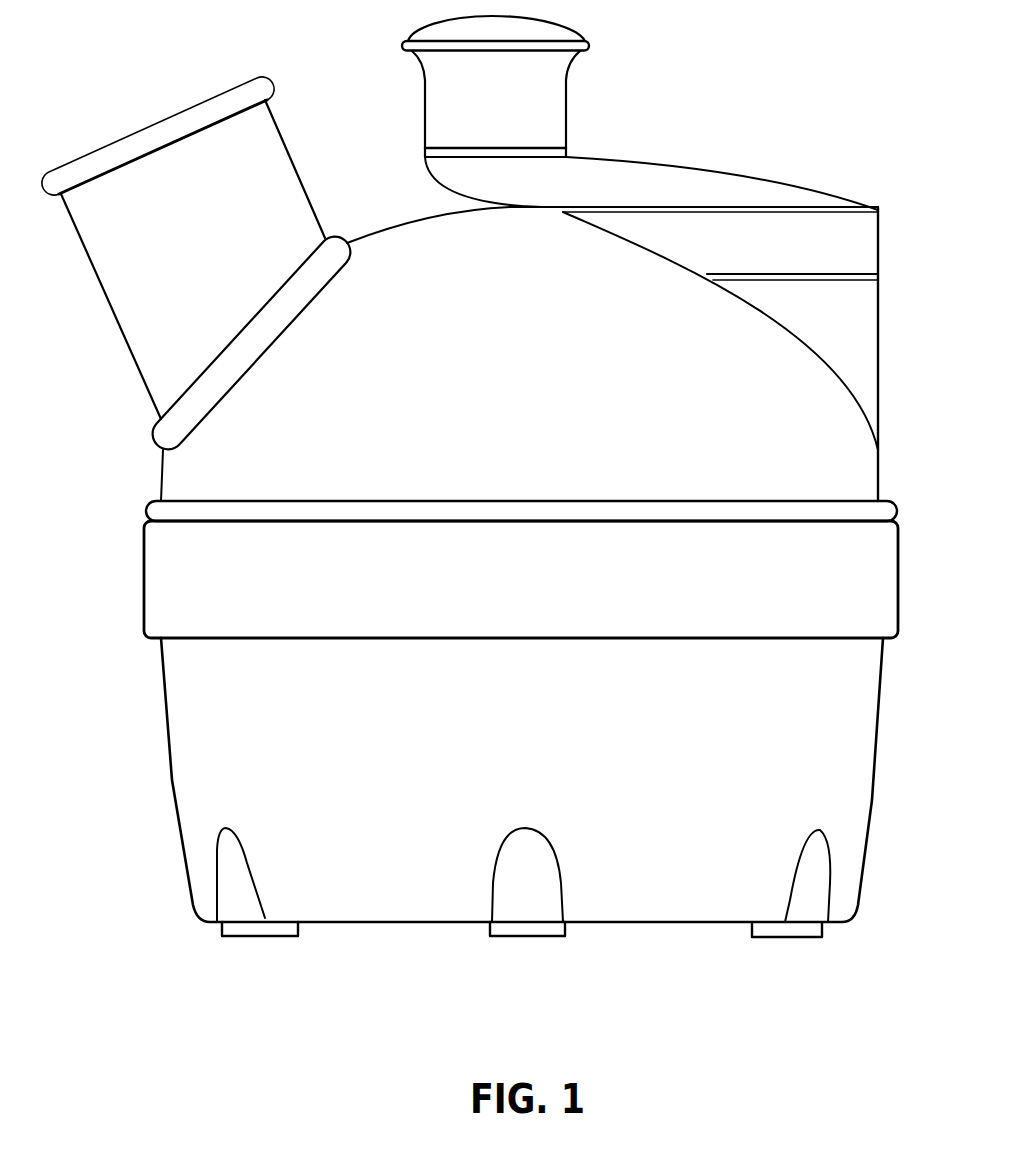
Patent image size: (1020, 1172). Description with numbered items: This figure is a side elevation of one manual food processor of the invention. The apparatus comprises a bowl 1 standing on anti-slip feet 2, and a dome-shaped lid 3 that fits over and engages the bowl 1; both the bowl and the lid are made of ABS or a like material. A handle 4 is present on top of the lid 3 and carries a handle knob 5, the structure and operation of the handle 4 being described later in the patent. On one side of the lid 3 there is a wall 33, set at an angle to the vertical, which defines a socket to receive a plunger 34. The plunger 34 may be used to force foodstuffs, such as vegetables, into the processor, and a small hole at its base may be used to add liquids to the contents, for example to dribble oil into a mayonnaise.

The bowl 1 is at (857, 733).
The anti-slip feet 2 is at (297, 925).
The dome-shaped lid 3 is at (805, 378).
The handle 4 is at (617, 172).
The handle knob 5 is at (550, 136).
The wall 33 is at (297, 307).
The plunger 34 is at (217, 250).